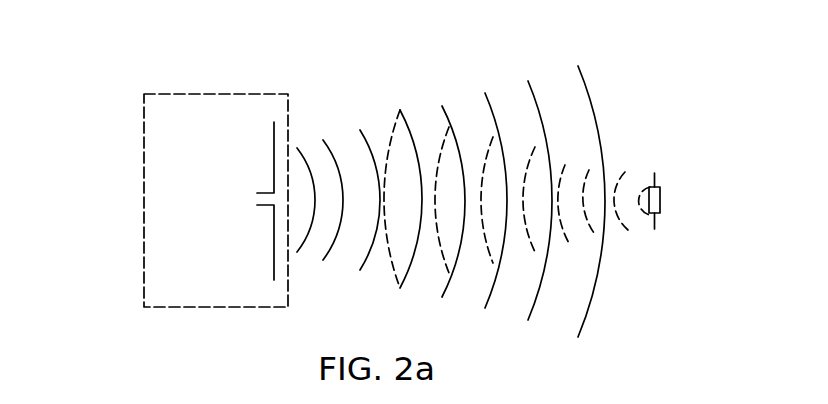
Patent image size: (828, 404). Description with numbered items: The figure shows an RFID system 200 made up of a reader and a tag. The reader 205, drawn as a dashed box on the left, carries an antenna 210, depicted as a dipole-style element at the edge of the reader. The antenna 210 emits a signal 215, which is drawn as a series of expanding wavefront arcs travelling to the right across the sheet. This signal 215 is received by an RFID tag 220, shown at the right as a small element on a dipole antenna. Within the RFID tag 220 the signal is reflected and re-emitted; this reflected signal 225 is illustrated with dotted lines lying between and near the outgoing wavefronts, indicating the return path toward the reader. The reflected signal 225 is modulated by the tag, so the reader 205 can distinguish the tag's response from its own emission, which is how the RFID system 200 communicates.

The RFID system 200 is at (149, 332).
The reader 205 is at (177, 94).
The antenna 210 is at (274, 146).
The signal 215 is at (495, 278).
The RFID tag 220 is at (660, 200).
The reflected signal 225 is at (590, 166).